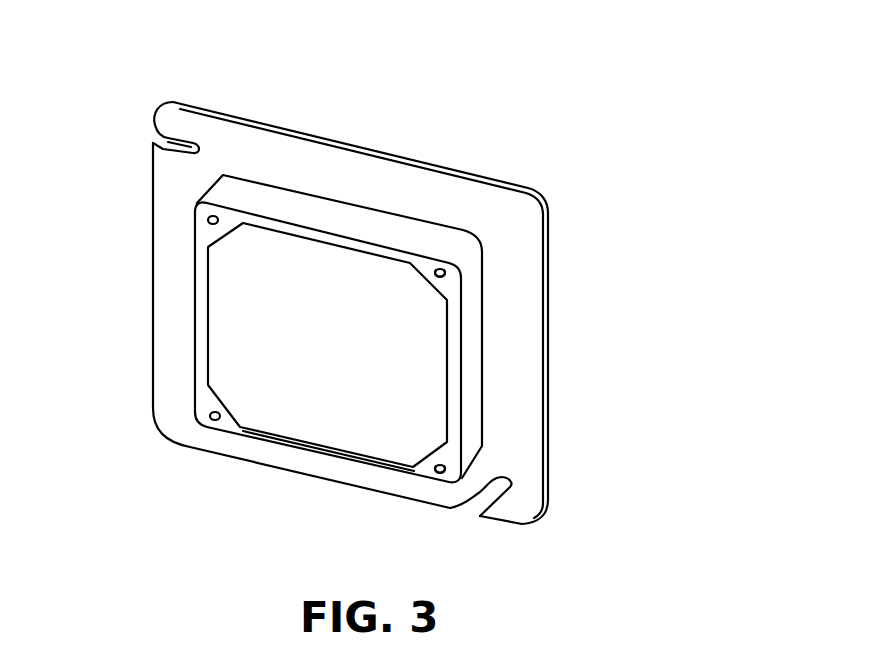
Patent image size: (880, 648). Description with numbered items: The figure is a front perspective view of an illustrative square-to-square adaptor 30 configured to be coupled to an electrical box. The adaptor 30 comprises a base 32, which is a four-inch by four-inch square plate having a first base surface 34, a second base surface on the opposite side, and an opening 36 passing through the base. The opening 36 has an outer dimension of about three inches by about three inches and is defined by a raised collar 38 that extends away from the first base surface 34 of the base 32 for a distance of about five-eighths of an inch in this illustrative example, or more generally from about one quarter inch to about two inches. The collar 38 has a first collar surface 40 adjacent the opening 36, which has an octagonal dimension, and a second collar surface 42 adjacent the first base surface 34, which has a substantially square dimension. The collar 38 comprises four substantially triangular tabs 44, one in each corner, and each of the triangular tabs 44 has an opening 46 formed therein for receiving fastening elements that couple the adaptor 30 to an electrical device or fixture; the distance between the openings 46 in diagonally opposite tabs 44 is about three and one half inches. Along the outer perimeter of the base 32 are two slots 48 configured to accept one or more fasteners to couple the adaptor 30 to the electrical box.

The adaptor 30 is at (662, 90).
The base 32 is at (562, 326).
The first base surface 34 is at (526, 401).
The opening 36 is at (245, 327).
The collar 38 is at (185, 268).
The first collar surface 40 is at (430, 360).
The second collar surface 42 is at (468, 350).
The substantially triangular tabs 44 is at (230, 218).
The opening 46 is at (445, 278).
The slots 48 is at (162, 138).